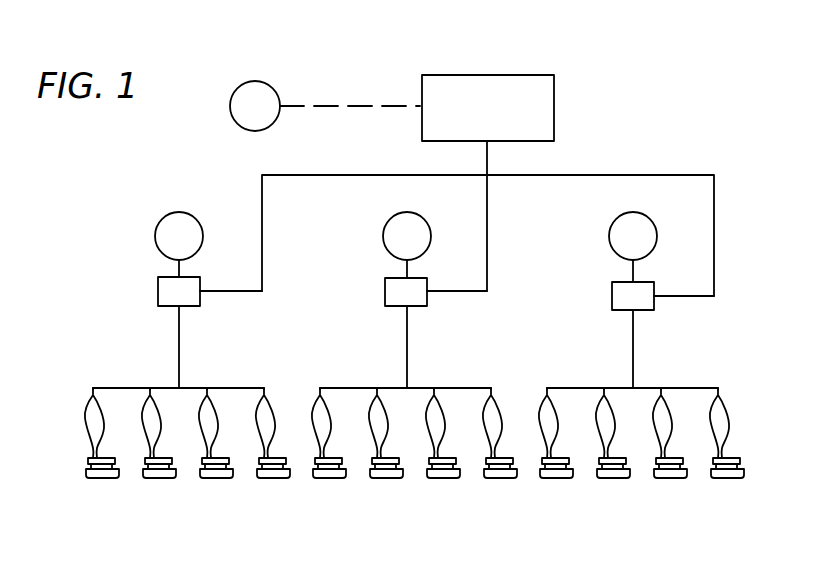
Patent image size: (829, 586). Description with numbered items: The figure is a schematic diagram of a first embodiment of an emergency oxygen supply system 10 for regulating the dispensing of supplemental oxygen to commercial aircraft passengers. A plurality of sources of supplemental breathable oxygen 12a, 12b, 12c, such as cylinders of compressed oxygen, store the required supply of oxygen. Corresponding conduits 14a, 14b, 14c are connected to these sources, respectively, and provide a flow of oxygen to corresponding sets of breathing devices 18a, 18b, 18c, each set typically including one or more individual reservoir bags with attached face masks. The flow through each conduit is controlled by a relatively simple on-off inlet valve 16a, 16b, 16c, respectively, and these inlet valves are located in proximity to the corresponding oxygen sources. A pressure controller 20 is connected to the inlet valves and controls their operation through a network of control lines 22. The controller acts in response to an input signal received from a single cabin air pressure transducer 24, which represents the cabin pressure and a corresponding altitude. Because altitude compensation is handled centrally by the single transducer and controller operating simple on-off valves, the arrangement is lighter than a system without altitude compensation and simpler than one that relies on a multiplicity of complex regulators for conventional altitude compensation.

The emergency oxygen supply system 10 is at (612, 59).
The pressure controller 20 is at (473, 76).
The network of control lines 22 is at (342, 175).
The cabin air pressure transducer 24 is at (229, 103).
The source of supplemental breathable oxygen 12a is at (164, 216).
The source of supplemental breathable oxygen 12b is at (392, 216).
The source of supplemental breathable oxygen 12c is at (618, 216).
The conduit 14a is at (178, 268).
The conduit 14b is at (406, 268).
The conduit 14c is at (632, 270).
The on-off inlet valve 16a is at (158, 291).
The on-off inlet valve 16b is at (385, 291).
The on-off inlet valve 16c is at (612, 296).
The set of breathing devices 18a is at (186, 499).
The set of breathing devices 18b is at (413, 499).
The set of breathing devices 18c is at (640, 501).